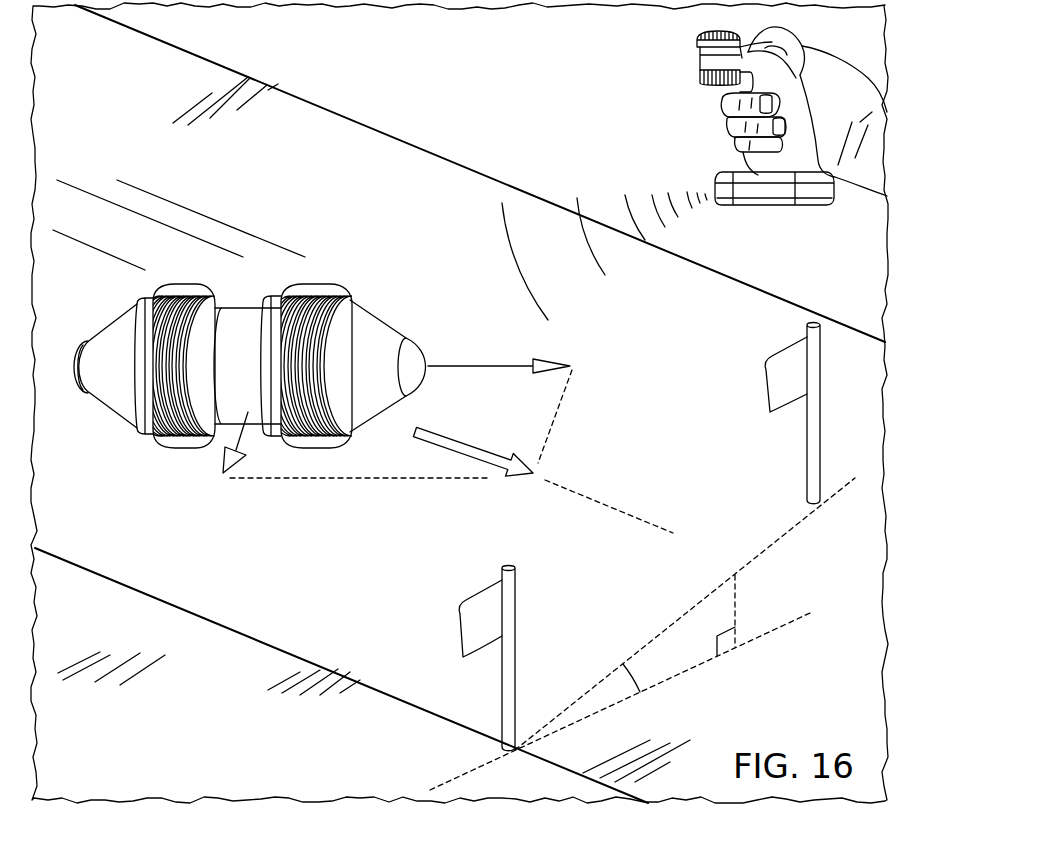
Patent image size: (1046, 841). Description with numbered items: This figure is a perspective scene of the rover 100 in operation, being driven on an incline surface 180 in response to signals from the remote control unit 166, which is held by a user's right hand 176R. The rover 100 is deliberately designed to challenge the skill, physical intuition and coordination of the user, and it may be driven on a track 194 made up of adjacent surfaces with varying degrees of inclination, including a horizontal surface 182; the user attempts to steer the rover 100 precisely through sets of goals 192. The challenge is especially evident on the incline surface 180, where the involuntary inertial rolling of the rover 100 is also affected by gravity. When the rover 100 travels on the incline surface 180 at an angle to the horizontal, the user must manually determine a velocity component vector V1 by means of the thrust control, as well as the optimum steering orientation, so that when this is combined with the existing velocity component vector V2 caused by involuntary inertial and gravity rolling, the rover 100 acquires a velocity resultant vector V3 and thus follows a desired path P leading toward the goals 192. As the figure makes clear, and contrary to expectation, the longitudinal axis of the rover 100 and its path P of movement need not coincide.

The rover 100 is at (363, 270).
The remote control unit 166 is at (676, 62).
The user's right hand 176R is at (830, 83).
The incline surface 180 is at (407, 157).
The horizontal surface 182 is at (105, 595).
The goals 192 is at (818, 417).
The track 194 is at (372, 77).
The velocity component vector V1 is at (550, 363).
The existing velocity component vector V2 is at (240, 460).
The velocity resultant vector V3 is at (478, 450).
The desired path P is at (590, 498).